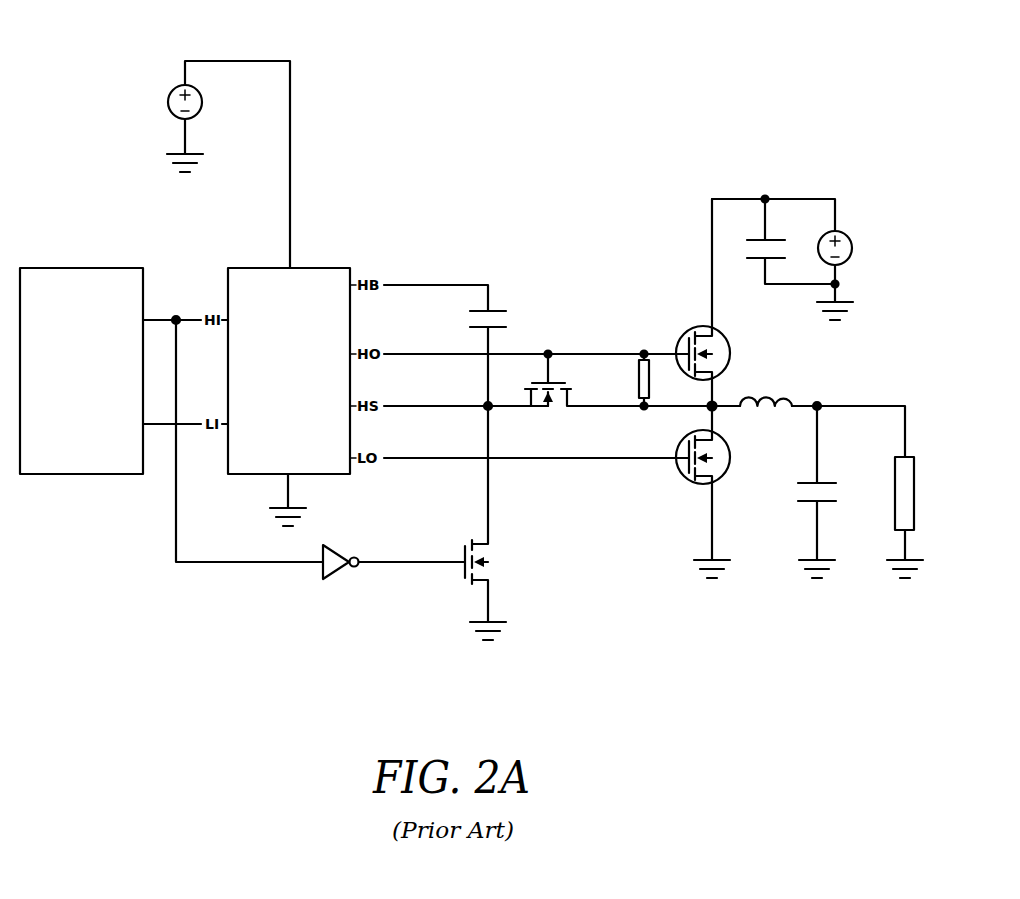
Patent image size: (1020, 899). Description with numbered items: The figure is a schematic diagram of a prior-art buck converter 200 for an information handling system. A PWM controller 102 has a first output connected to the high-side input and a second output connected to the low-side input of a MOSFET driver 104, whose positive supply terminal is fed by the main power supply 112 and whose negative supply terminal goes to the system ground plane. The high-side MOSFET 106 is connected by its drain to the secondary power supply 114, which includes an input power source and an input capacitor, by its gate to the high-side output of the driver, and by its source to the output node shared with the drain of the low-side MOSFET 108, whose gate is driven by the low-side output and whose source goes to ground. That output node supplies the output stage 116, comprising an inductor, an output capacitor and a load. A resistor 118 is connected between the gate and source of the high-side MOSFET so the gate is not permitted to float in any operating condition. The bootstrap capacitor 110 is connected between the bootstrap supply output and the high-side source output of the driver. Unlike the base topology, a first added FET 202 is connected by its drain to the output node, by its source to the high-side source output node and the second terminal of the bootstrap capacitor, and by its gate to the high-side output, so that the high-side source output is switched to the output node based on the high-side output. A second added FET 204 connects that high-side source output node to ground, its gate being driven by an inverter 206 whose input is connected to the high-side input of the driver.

The pulse-width modulation (PWM) controller 102 is at (30, 266).
The MOSFET driver 104 is at (236, 266).
The high-side MOSFET (QH) 106 is at (678, 348).
The low-side MOSFET (QL) 108 is at (678, 450).
The bootstrap capacitor (CB) 110 is at (504, 328).
The main power supply (VDD) 112 is at (157, 66).
The secondary power supply 114 is at (797, 179).
The output stage 116 is at (874, 387).
The resistor (R1) 118 is at (650, 383).
The buck converter 200 is at (90, 643).
The FET (Q4) 202 is at (536, 410).
The FET (Q5) 204 is at (489, 577).
The inverter 206 is at (330, 546).